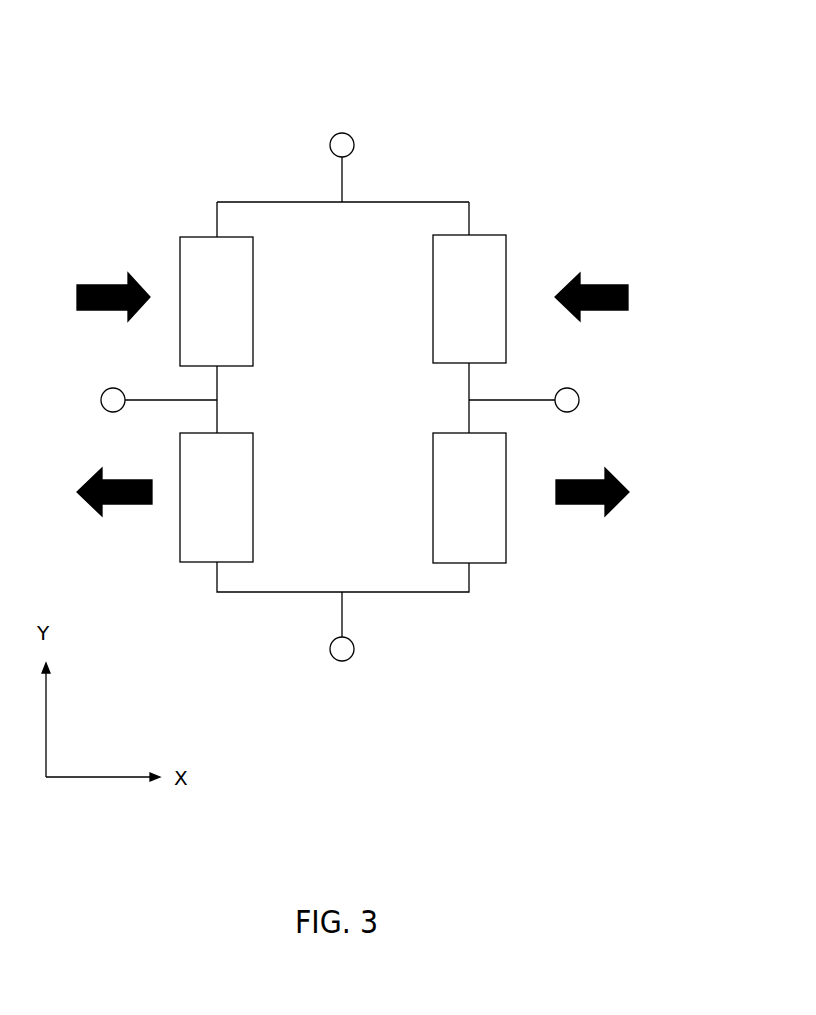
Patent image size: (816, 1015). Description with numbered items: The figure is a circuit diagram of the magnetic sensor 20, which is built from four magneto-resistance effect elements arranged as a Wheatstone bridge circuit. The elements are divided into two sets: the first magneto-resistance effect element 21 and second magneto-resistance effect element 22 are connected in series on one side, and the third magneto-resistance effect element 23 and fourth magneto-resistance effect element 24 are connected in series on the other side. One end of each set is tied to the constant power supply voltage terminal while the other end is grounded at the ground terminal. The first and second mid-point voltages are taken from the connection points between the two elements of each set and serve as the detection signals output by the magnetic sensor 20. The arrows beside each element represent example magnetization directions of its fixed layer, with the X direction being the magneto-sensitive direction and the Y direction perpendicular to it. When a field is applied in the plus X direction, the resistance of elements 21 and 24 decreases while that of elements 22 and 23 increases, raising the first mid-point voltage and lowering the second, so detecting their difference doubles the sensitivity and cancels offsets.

The magnetic sensor 20 is at (343, 360).
The first magneto-resistance effect element 21 is at (188, 260).
The second magneto-resistance effect element 22 is at (190, 480).
The third magneto-resistance effect element 23 is at (498, 263).
The fourth magneto-resistance effect element 24 is at (498, 478).